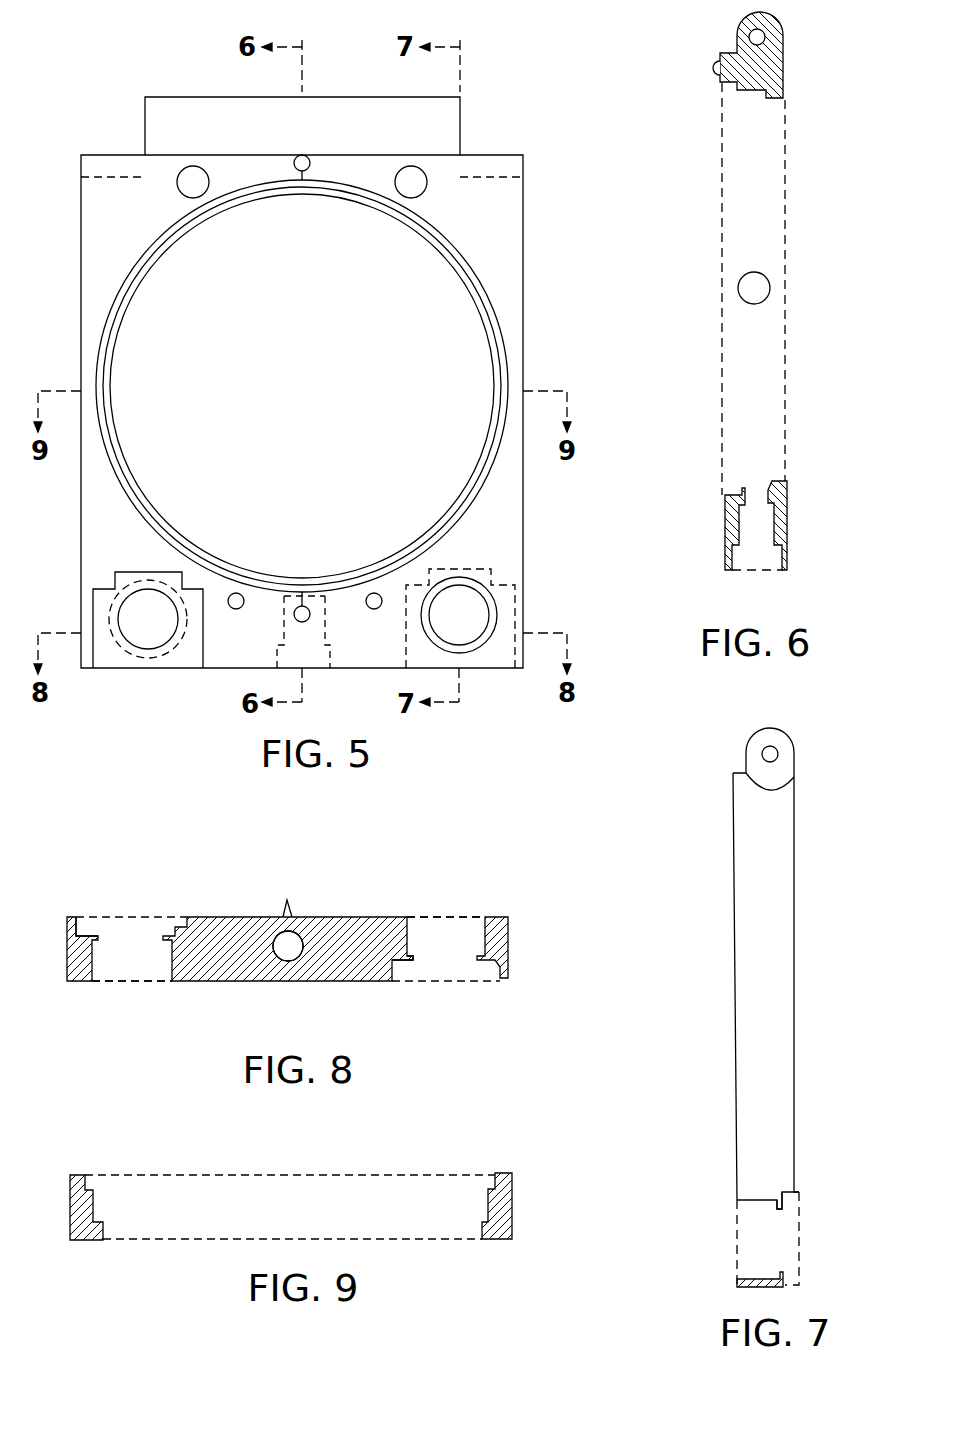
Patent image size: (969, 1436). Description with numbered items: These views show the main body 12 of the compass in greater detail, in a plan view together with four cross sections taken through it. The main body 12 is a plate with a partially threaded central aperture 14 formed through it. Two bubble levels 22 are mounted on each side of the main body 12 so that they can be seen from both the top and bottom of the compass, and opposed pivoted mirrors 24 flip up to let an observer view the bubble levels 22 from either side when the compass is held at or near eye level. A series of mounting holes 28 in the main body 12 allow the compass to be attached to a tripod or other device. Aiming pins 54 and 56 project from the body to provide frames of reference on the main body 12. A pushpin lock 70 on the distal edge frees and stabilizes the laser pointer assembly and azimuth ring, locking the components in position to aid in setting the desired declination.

In FIG. 5, the main body 12 is at (523, 500).
In FIG. 6, the main body 12 is at (783, 548).
In FIG. 7, the main body 12 is at (795, 830).
In FIG. 8, the main body 12 is at (323, 983).
In FIG. 9, the main body 12 is at (512, 1236).
In FIG. 5, the partially threaded central aperture 14 is at (443, 511).
In FIG. 6, the partially threaded central aperture 14 is at (787, 440).
In FIG. 7, the partially threaded central aperture 14 is at (752, 1200).
In FIG. 5, the bubble levels 22 is at (304, 618).
In FIG. 7, the bubble levels 22 is at (742, 1244).
In FIG. 8, the bubble levels 22 is at (116, 967).
In FIG. 7, the pivoted mirrors 24 is at (796, 1204).
In FIG. 8, the pivoted mirrors 24 is at (97, 918).
In FIG. 5, the mounting holes 28 is at (179, 169).
In FIG. 5, the aiming pin 54 is at (300, 160).
In FIG. 6, the aiming pin 54 is at (712, 66).
In FIG. 5, the aiming pin 56 is at (296, 622).
In FIG. 6, the aiming pin 56 is at (728, 520).
In FIG. 8, the aiming pin 56 is at (293, 903).
In FIG. 8, the pushpin lock 70 is at (273, 938).